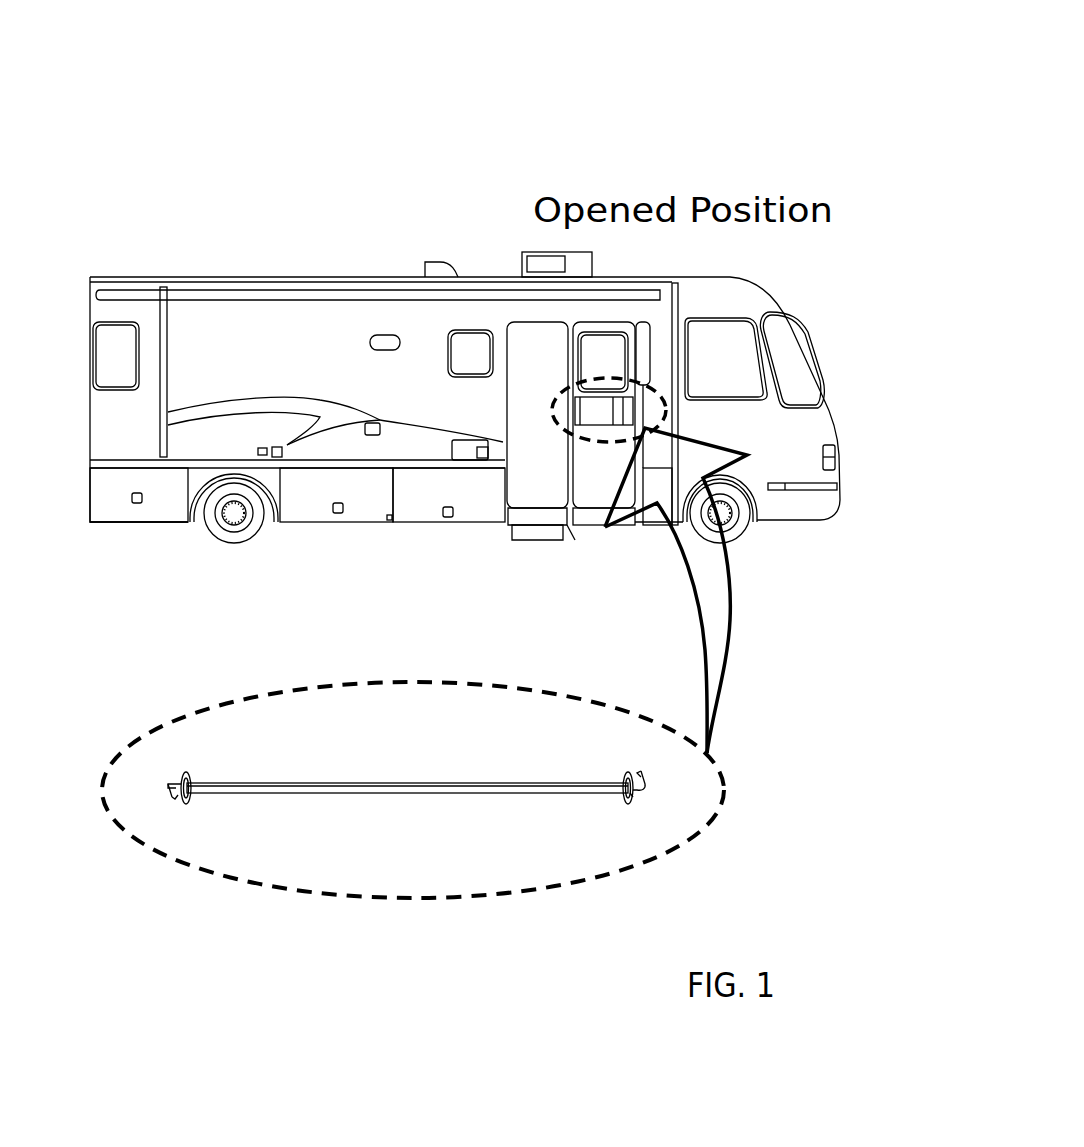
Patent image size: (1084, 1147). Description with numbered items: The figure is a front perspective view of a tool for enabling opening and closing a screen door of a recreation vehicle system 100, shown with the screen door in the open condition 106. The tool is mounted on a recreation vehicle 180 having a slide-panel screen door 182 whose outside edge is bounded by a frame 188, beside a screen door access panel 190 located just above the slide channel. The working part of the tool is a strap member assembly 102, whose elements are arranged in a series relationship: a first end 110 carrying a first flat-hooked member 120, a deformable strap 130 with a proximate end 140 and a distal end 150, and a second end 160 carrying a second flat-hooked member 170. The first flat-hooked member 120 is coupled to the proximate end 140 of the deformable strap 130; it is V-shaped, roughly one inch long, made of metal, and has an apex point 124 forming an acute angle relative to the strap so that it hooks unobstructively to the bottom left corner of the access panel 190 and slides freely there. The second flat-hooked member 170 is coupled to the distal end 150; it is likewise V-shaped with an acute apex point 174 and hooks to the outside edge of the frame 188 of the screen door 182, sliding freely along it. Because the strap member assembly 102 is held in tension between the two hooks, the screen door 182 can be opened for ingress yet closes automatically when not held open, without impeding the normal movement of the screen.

The tool for enabling opening and closing a screen door of a recreation vehicle syst 100 is at (621, 86).
The open condition 106 is at (621, 146).
The screen door access panel 190 is at (620, 318).
The frame 188 is at (639, 320).
The screen door 182 is at (612, 485).
The strap member assembly 102 is at (598, 432).
The recreation vehicle 180 is at (136, 527).
The deformable strap 130 is at (425, 790).
The proximate end 140 is at (197, 767).
The first end 110 is at (163, 766).
The apex point 124 is at (166, 781).
The first flat-hooked member 120 is at (174, 803).
The distal end 150 is at (614, 767).
The second end 160 is at (650, 765).
The acute apex point 174 is at (653, 776).
The second flat-hooked member 170 is at (639, 810).